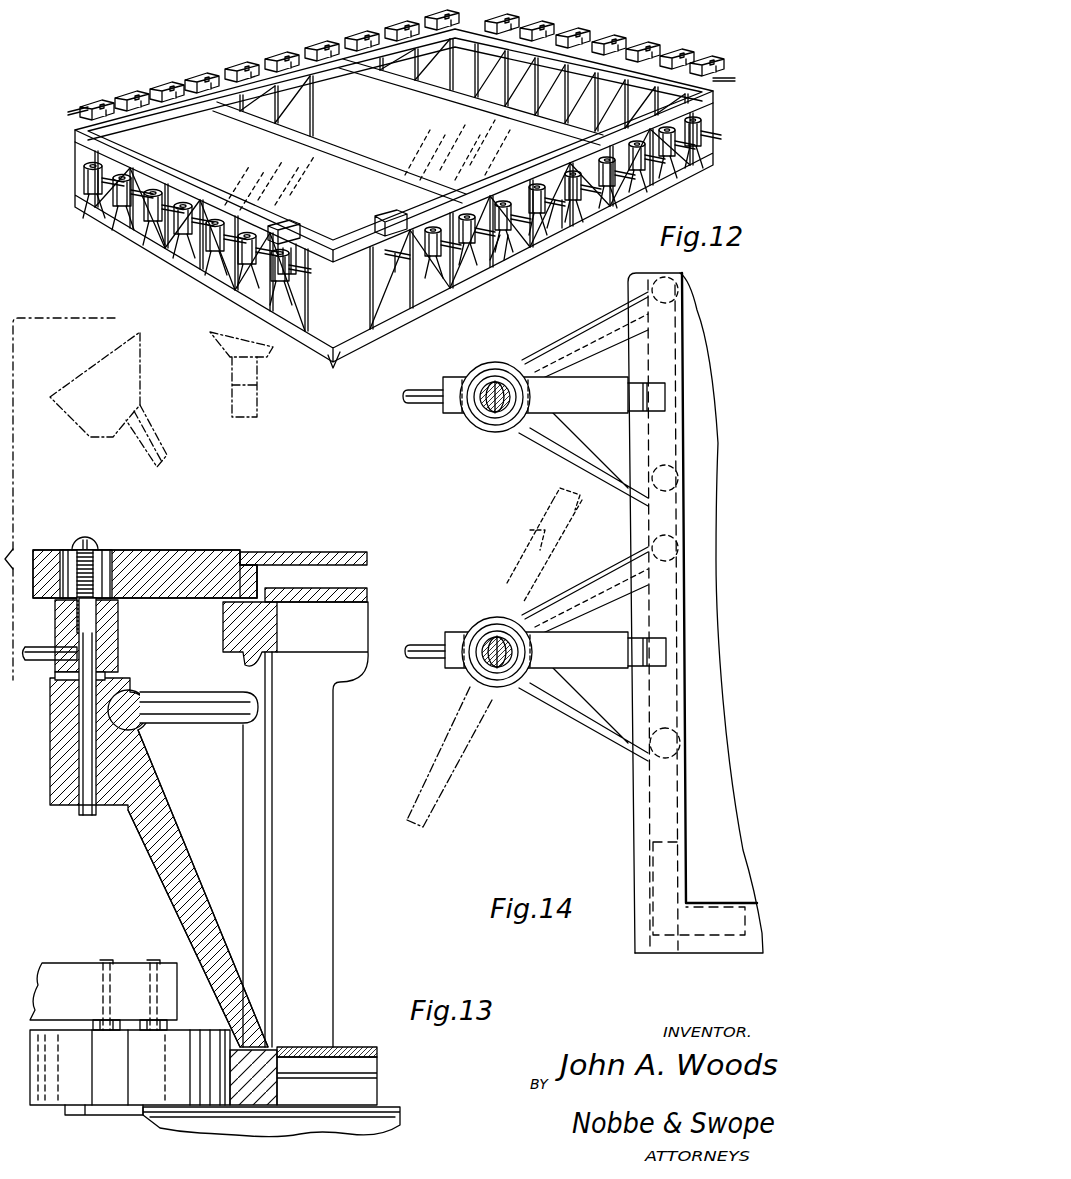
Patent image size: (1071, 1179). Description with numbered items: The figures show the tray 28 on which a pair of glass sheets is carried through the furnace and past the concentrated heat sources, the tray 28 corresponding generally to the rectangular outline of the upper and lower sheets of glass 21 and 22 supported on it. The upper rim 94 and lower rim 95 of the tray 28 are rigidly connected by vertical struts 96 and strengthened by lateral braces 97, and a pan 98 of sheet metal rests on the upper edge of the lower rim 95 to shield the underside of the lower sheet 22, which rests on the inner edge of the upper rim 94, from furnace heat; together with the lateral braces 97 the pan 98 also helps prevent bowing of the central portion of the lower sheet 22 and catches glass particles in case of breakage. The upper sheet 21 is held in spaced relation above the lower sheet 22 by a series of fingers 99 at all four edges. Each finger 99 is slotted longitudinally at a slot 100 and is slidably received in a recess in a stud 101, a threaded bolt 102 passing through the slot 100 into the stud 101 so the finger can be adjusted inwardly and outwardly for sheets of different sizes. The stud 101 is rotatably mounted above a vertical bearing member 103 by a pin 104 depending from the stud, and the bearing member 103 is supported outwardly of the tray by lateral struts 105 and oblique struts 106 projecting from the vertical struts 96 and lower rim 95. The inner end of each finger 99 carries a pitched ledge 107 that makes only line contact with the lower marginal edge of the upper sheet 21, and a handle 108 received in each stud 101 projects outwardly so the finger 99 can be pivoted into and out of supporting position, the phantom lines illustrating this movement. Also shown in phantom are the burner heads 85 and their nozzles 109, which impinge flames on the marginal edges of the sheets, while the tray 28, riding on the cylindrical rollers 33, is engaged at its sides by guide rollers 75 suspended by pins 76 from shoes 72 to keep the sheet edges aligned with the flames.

In FIG. 13, the upper sheet of glass 21 is at (297, 557).
In FIG. 13, the lower sheet of glass 22 is at (358, 587).
In FIG. 12, the tray 28 is at (146, 75).
In FIG. 14, the tray 28 is at (626, 823).
In FIG. 13, the tray 28 is at (150, 873).
In FIG. 13, the cylindrical rollers 33 is at (325, 1123).
In FIG. 13, the shoe 72 is at (60, 990).
In FIG. 13, the guide rollers 75 is at (82, 1070).
In FIG. 13, the pins 76 is at (127, 963).
In FIG. 13, the burner heads 85 is at (97, 387).
In FIG. 12, the upper rim 94 is at (115, 145).
In FIG. 14, the upper rim 94 is at (662, 790).
In FIG. 13, the upper rim 94 is at (247, 618).
In FIG. 12, the lower rim 95 is at (115, 228).
In FIG. 13, the lower rim 95 is at (258, 1087).
In FIG. 12, the vertical struts 96 is at (334, 363).
In FIG. 14, the vertical struts 96 is at (667, 507).
In FIG. 13, the vertical struts 96 is at (253, 822).
In FIG. 12, the lateral braces 97 is at (462, 105).
In FIG. 13, the lateral braces 97 is at (322, 623).
In FIG. 12, the pan 98 is at (340, 133).
In FIG. 14, the pan 98 is at (702, 448).
In FIG. 13, the pan 98 is at (317, 1047).
In FIG. 12, the fingers 99 is at (220, 78).
In FIG. 14, the fingers 99 is at (553, 403).
In FIG. 13, the fingers 99 is at (162, 577).
In FIG. 14, the slot 100 is at (473, 407).
In FIG. 13, the slot 100 is at (110, 552).
In FIG. 12, the stud 101 is at (300, 237).
In FIG. 14, the stud 101 is at (492, 423).
In FIG. 13, the stud 101 is at (100, 635).
In FIG. 14, the threaded bolt 102 is at (505, 387).
In FIG. 13, the threaded bolt 102 is at (85, 553).
In FIG. 12, the vertical bearing member 103 is at (703, 148).
In FIG. 14, the vertical bearing member 103 is at (493, 362).
In FIG. 13, the vertical bearing member 103 is at (100, 737).
In FIG. 13, the pin 104 is at (83, 702).
In FIG. 12, the lateral struts 105 is at (513, 233).
In FIG. 14, the lateral struts 105 is at (588, 342).
In FIG. 13, the lateral struts 105 is at (200, 707).
In FIG. 12, the oblique struts 106 is at (560, 210).
In FIG. 13, the oblique struts 106 is at (163, 843).
In FIG. 14, the pitched ledge 107 is at (665, 393).
In FIG. 13, the pitched ledge 107 is at (247, 567).
In FIG. 12, the handle 108 is at (255, 262).
In FIG. 14, the handle 108 is at (422, 407).
In FIG. 13, the handle 108 is at (40, 662).
In FIG. 13, the nozzles 109 is at (140, 440).